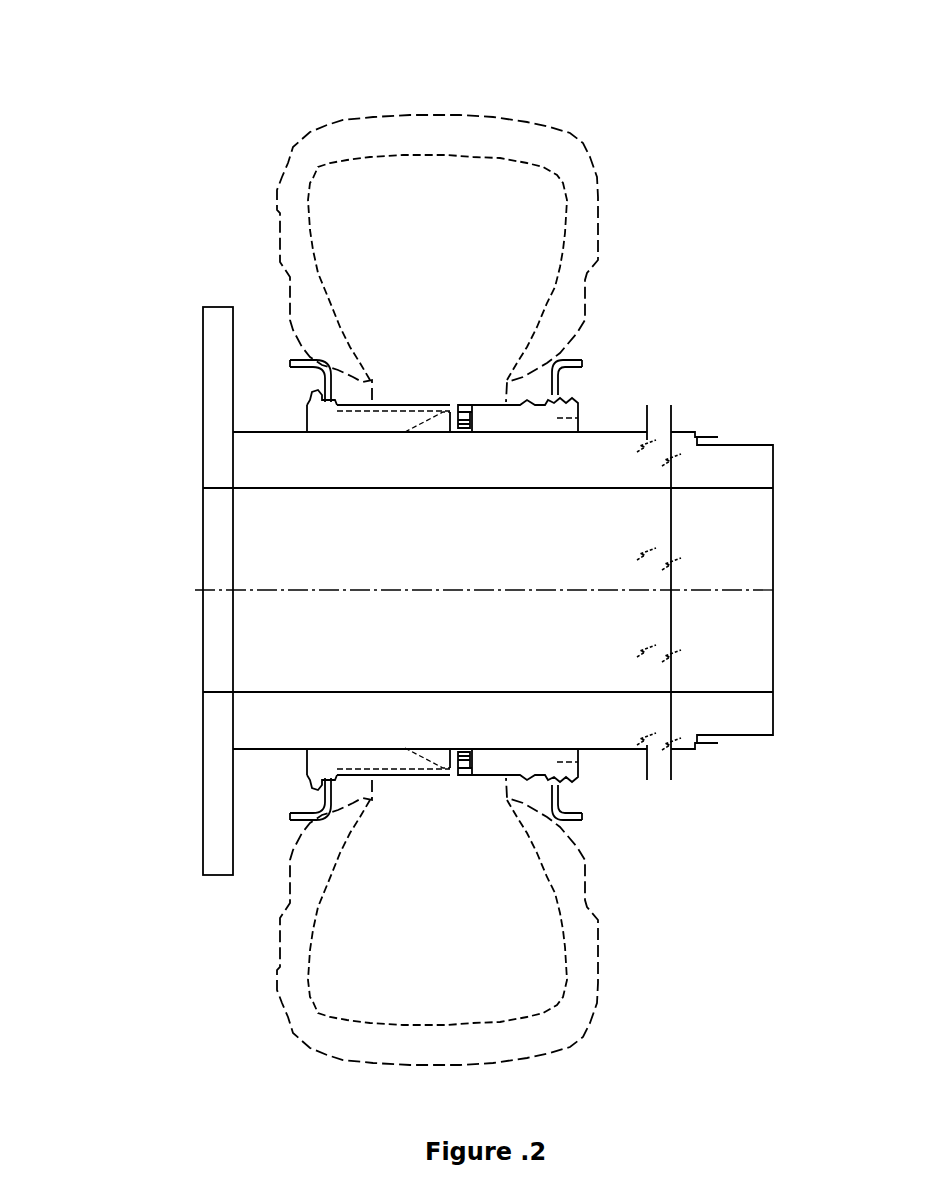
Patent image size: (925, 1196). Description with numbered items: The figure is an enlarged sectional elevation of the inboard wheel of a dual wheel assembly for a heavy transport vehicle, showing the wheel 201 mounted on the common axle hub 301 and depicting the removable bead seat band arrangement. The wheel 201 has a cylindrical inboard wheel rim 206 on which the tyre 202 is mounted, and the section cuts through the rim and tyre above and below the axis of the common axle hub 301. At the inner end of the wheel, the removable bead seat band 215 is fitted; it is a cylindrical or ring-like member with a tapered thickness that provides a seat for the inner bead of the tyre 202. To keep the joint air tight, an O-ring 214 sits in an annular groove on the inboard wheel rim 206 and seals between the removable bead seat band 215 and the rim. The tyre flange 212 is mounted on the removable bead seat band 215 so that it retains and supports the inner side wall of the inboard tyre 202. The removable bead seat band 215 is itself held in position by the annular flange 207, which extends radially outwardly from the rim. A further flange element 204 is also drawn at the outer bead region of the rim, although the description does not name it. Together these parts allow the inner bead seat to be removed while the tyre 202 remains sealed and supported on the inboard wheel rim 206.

The wheel 201 is at (158, 62).
The tyre 202 is at (308, 170).
The bead lock ring 204 is at (558, 392).
The inboard wheel rim 206 is at (537, 424).
The annular flange 207 is at (308, 405).
The tyre flange 212 is at (290, 360).
The O-ring 214 is at (308, 770).
The removable bead seat band 215 is at (348, 780).
The common axle hub 301 is at (228, 473).